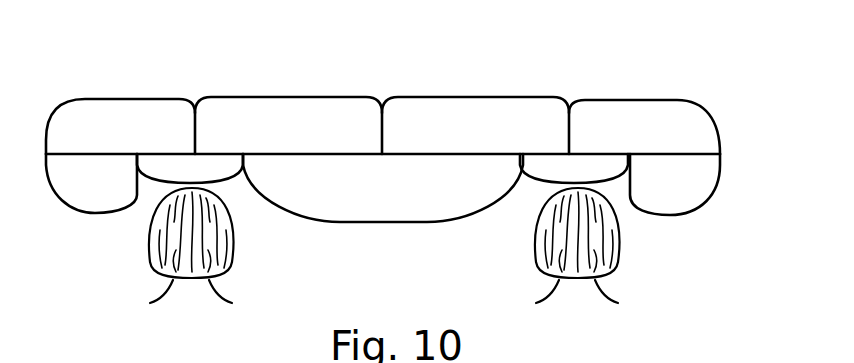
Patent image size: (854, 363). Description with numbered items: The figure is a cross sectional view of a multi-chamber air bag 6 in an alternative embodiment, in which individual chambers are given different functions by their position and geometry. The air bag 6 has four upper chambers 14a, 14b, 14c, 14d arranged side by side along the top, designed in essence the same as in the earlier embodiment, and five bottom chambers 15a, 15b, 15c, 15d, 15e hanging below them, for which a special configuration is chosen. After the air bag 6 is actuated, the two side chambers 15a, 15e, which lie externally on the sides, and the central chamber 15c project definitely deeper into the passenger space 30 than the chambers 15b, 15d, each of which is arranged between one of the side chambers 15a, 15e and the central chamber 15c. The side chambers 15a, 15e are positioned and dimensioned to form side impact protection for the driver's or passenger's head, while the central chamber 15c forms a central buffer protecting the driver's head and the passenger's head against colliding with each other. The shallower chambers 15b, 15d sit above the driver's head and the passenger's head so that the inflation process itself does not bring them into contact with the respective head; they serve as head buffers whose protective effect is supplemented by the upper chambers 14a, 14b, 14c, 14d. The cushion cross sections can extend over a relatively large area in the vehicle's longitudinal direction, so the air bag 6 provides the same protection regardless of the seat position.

The air bag 6 is at (712, 116).
The upper chamber 14a is at (120, 118).
The upper chamber 14b is at (250, 120).
The upper chamber 14c is at (493, 120).
The upper chamber 14d is at (632, 120).
The side bottom chamber 15a is at (94, 198).
The intermediate bottom chamber 15b is at (220, 172).
The central bottom chamber 15c is at (363, 198).
The intermediate bottom chamber 15d is at (545, 170).
The side bottom chamber 15e is at (674, 200).
The passenger space 30 is at (433, 303).